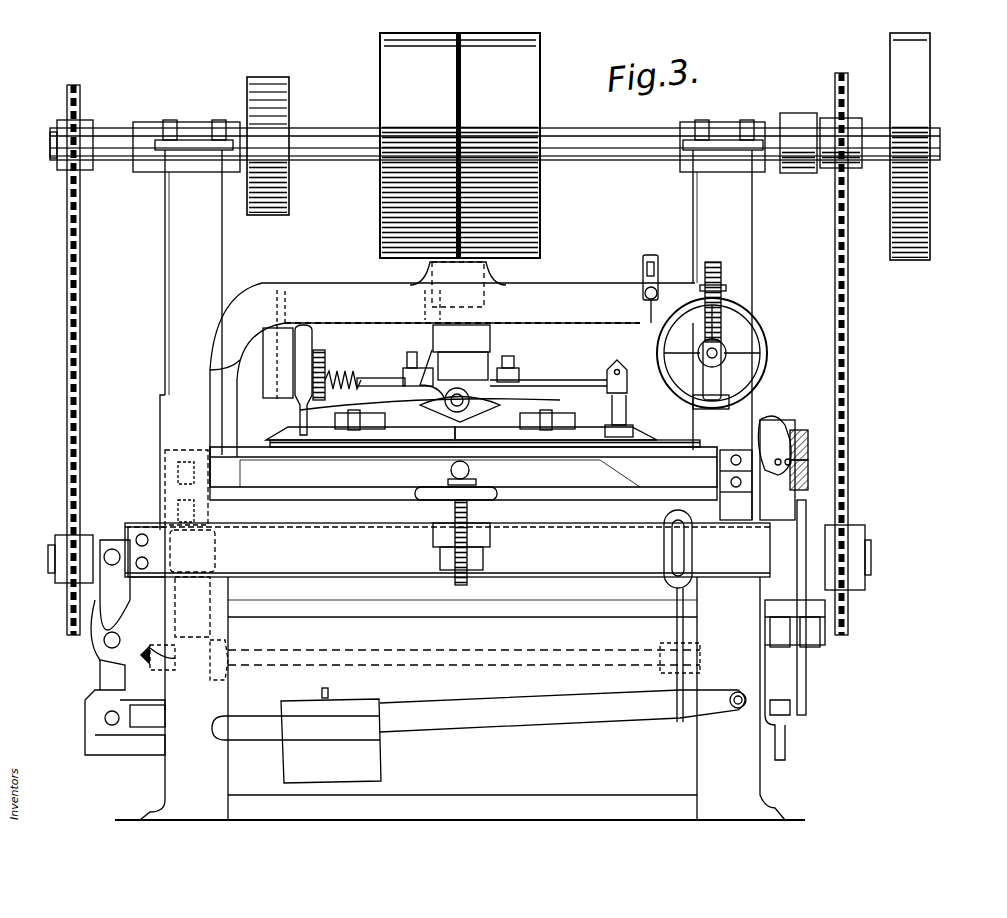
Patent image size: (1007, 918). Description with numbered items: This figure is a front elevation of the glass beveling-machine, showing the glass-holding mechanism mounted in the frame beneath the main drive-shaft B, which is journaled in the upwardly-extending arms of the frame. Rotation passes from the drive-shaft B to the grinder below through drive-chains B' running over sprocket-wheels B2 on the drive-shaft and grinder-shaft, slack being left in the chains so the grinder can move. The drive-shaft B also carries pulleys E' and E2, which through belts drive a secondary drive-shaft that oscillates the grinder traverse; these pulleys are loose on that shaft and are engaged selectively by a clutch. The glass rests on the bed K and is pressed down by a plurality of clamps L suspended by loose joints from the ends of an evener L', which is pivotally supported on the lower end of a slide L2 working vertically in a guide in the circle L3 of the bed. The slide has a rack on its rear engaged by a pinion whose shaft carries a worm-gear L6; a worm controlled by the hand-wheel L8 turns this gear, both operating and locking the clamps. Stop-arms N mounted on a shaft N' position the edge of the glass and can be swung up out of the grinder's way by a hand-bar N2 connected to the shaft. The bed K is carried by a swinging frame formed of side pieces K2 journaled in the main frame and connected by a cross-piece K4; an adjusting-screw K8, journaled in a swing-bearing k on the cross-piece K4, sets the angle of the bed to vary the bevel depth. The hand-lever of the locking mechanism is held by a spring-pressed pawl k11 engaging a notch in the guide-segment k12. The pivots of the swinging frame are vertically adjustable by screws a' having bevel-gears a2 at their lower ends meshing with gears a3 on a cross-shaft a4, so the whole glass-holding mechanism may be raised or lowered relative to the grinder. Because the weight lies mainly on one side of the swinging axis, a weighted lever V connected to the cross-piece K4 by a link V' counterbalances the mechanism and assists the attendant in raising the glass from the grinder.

The main drive-shaft B is at (292, 146).
The drive-chain B' is at (92, 360).
The sprocket-wheel B2 is at (80, 110).
The pulley E' is at (821, 126).
The pulley E2 is at (940, 195).
The clamp L is at (483, 451).
The evener L' is at (430, 382).
The slide L2 is at (461, 352).
The circle L3 is at (452, 385).
The worm-gear L6 is at (712, 262).
The hand-wheel L8 is at (768, 318).
The stop-arm N is at (455, 381).
The shaft N' is at (600, 369).
The hand-bar N2 is at (643, 268).
The bed K is at (463, 473).
The side piece K2 is at (790, 398).
The cross-piece K4 is at (447, 550).
The adjusting-screw K8 is at (497, 493).
The swing-bearing k is at (440, 540).
The spring-pressed pawl k11 is at (808, 480).
The guide-segment k12 is at (808, 455).
The screw a' is at (196, 607).
The bevel-gear a2 is at (166, 663).
The bevel-gear a3 is at (205, 675).
The cross-shaft a4 is at (464, 648).
The weighted lever V is at (479, 735).
The link V' is at (657, 616).